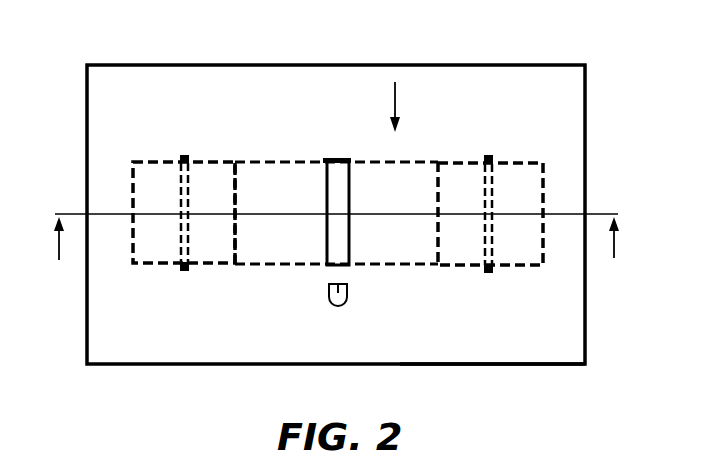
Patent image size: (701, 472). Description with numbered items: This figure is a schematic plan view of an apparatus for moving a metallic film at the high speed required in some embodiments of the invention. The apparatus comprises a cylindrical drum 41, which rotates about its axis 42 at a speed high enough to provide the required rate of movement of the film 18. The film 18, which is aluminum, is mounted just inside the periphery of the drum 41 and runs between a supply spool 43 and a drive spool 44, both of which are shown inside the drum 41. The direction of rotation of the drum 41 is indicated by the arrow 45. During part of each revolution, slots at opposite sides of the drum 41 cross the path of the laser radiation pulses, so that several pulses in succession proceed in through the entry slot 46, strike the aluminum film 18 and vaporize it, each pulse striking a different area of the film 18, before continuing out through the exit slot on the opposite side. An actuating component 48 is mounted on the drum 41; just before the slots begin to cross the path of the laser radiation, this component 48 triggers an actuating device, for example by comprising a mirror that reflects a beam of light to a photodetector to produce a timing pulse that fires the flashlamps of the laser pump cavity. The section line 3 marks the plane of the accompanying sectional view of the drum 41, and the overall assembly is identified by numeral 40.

The section line 3- 3 is at (337, 255).
The film 18 is at (405, 200).
The housing 40 is at (600, 105).
The cylindrical drum 41 is at (500, 348).
The axis 42 is at (243, 215).
The supply spool 43 is at (511, 251).
The drive spool 44 is at (163, 245).
The arrow 45 is at (399, 102).
The entry slot 46 is at (326, 190).
The actuating component 48 is at (339, 304).